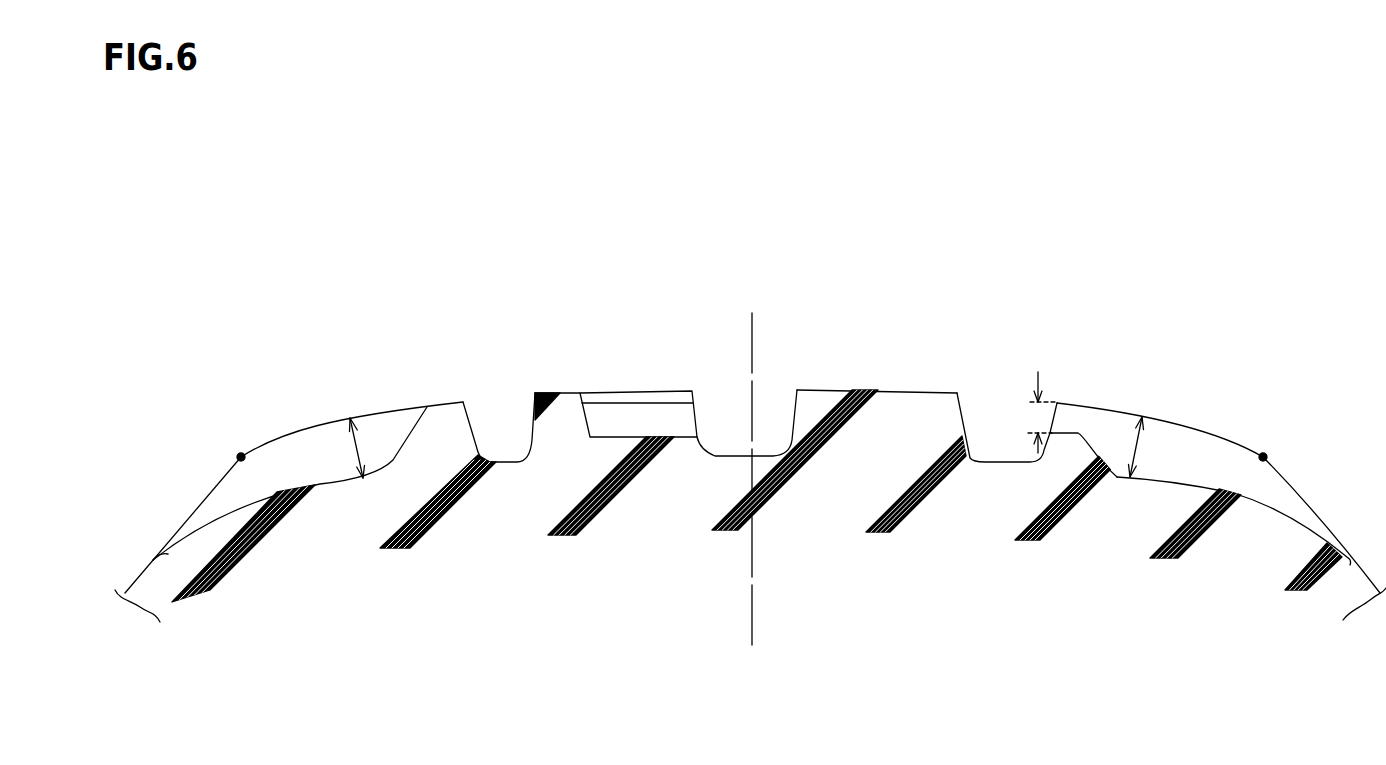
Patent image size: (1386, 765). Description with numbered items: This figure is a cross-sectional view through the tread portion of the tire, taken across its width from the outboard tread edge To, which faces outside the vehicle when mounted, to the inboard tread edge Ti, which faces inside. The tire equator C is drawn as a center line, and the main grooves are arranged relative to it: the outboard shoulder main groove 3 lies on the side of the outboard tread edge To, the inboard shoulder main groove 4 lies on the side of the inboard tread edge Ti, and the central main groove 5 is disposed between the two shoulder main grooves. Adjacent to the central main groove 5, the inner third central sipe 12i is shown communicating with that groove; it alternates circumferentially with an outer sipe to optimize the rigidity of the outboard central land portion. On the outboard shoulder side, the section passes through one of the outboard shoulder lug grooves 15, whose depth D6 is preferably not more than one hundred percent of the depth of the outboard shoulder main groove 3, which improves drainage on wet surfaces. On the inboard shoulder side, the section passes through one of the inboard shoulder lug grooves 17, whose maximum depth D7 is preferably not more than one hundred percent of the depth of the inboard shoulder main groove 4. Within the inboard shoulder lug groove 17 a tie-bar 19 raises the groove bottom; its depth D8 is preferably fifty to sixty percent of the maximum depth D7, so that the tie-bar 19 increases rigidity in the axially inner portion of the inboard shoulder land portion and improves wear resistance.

The outboard shoulder lug grooves 15 is at (385, 433).
The outboard shoulder main groove 3 is at (498, 400).
The inner third central sipe 12i is at (642, 418).
The tire equator C is at (753, 465).
The central main groove 5 is at (772, 397).
The inboard shoulder main groove 4 is at (983, 400).
The depth of the tie-bar D8 is at (1040, 417).
The tie-bar 19 is at (1067, 452).
The inboard shoulder lug grooves 17 is at (1183, 447).
The outboard tread edge To is at (241, 457).
The inboard tread edge Ti is at (1263, 457).
The depth of the outboard shoulder lug grooves D6 is at (355, 450).
The maximum depth of the inboard shoulder lug grooves D7 is at (1139, 450).